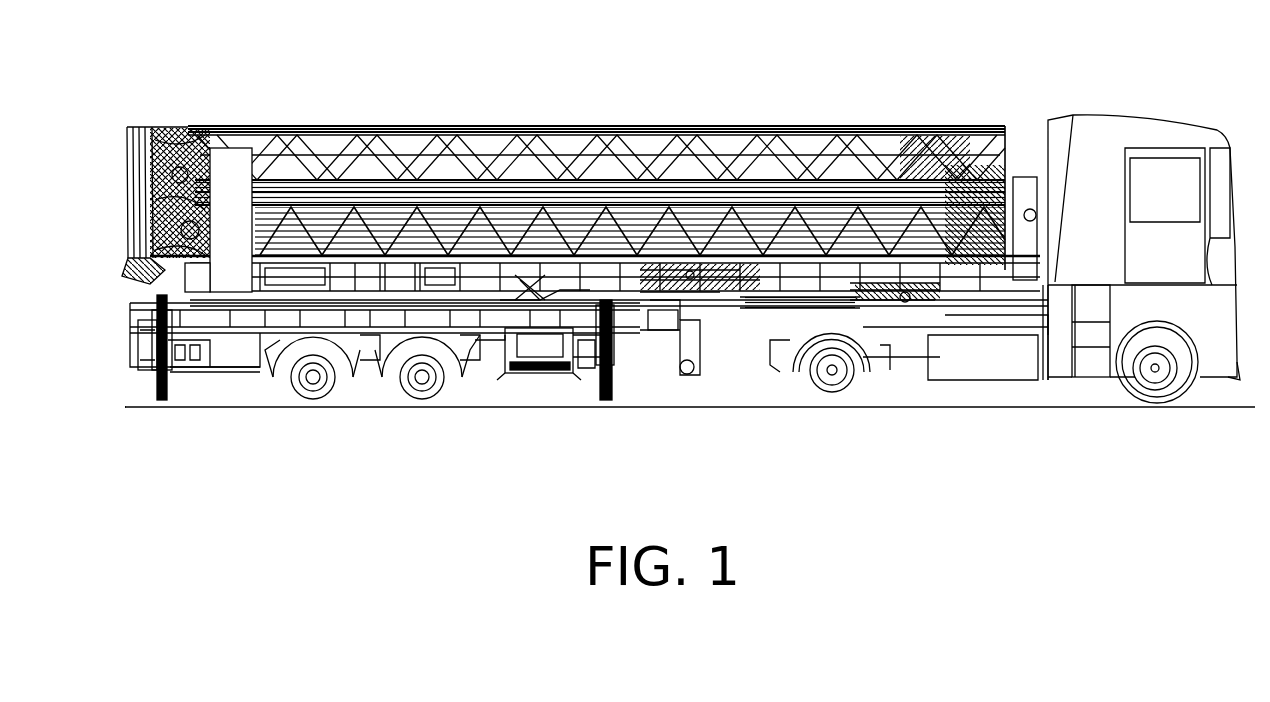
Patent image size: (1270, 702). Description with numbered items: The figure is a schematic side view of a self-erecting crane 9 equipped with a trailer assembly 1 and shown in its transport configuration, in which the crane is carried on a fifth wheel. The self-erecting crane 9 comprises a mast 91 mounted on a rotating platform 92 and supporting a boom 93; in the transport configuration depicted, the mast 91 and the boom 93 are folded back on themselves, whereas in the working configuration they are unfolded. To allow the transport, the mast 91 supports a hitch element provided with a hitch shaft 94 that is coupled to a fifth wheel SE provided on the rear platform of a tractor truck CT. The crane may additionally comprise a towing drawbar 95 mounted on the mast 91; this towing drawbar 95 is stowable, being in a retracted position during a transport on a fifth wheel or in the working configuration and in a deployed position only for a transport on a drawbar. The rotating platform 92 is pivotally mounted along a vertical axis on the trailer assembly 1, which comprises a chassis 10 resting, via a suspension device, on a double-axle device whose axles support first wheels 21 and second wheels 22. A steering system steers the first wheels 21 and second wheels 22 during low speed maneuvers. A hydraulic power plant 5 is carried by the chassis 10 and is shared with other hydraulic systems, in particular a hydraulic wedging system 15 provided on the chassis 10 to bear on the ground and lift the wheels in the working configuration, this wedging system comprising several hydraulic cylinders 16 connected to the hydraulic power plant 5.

The trailer assembly 1 is at (254, 383).
The hydraulic power plant 5 is at (205, 375).
The self-erecting crane 9 is at (948, 77).
The chassis 10 is at (480, 355).
The hydraulic wedging system 15 is at (152, 383).
The hydraulic cylinders 16 is at (147, 322).
The first wheels 21 is at (422, 400).
The second wheels 22 is at (318, 400).
The mast 91 is at (735, 285).
The rotating platform 92 is at (351, 125).
The boom 93 is at (482, 125).
The hitch shaft 94 is at (880, 313).
The towing drawbar 95 is at (768, 300).
The fifth wheel SE is at (895, 323).
The tractor truck CT is at (1055, 385).